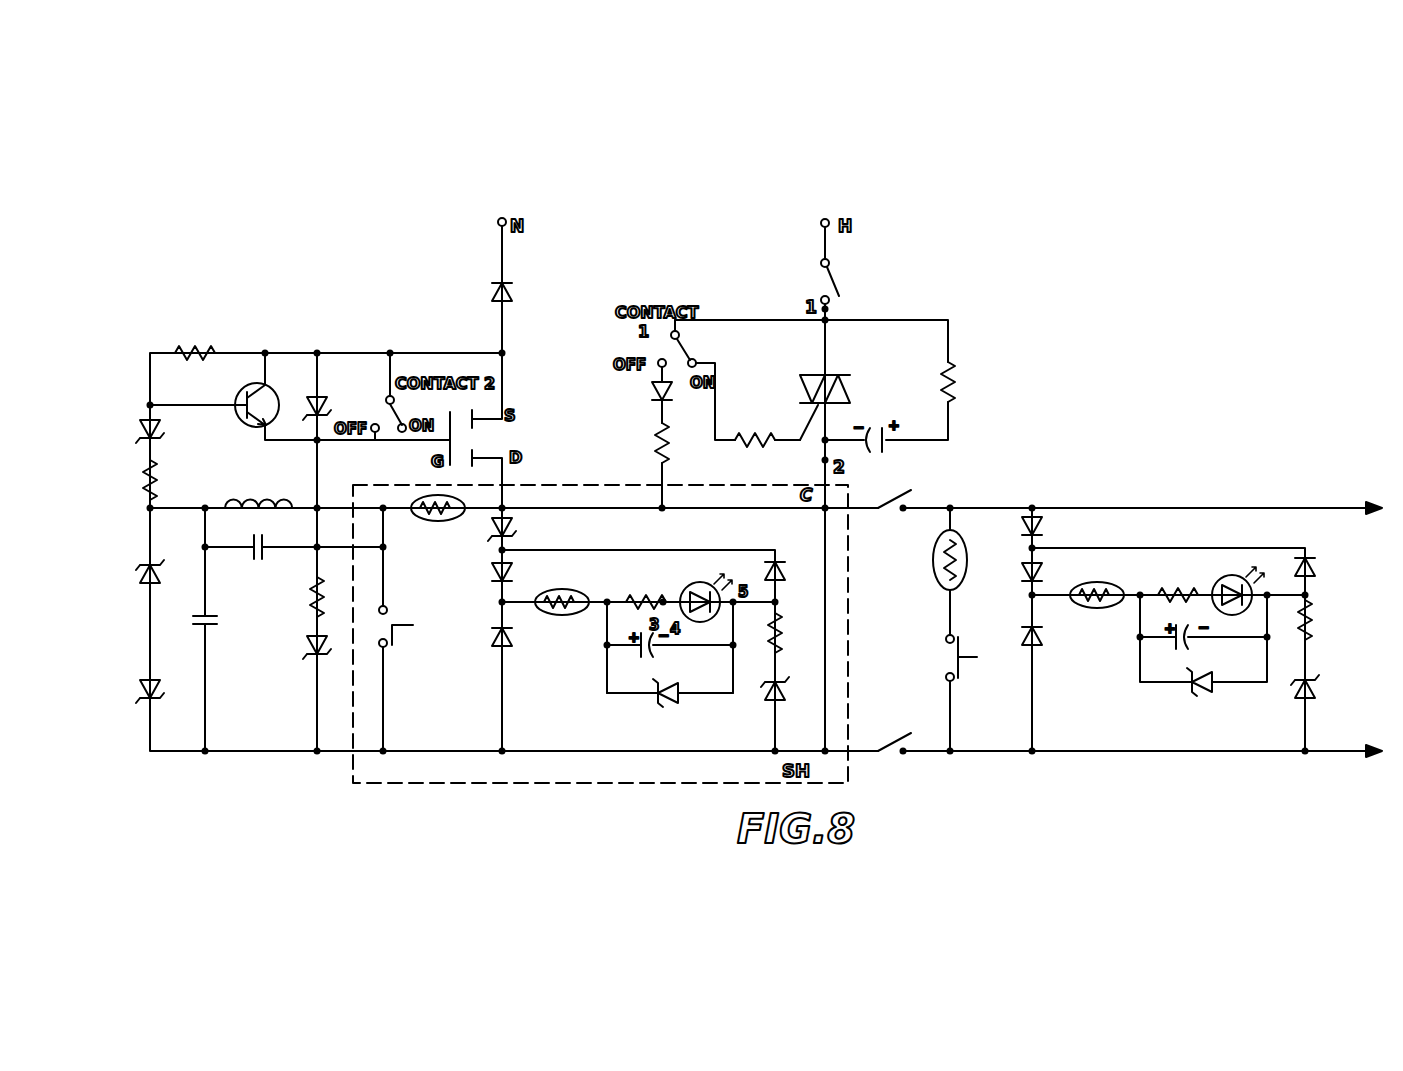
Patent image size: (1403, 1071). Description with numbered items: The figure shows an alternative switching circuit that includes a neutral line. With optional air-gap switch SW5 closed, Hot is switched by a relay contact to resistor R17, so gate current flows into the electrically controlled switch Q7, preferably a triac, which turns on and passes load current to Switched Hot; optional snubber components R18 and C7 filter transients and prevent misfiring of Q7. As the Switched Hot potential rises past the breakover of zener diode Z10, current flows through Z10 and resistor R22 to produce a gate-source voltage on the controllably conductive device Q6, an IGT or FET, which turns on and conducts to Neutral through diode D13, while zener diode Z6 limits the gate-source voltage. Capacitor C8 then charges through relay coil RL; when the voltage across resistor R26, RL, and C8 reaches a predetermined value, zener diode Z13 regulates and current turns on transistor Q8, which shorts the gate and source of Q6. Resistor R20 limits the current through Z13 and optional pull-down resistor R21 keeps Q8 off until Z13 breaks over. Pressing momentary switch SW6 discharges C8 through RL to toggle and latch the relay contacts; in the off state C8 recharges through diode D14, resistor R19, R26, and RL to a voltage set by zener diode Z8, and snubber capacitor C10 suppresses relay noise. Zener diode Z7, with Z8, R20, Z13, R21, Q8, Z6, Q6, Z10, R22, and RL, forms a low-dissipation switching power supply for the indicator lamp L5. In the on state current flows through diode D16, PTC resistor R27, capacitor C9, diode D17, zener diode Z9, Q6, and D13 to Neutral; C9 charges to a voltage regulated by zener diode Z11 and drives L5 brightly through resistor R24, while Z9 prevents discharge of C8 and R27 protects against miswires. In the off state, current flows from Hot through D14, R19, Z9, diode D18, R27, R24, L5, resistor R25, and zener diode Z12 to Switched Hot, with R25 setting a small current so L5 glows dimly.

The pull-down resistor R21 is at (197, 342).
The zener diode Z13 is at (166, 431).
The transistor Q8 is at (233, 399).
The resistor R20 is at (171, 480).
The relay coil RL is at (260, 494).
The zener diode Z6 is at (324, 398).
The controllably conductive device Q6 is at (497, 429).
The diode D13 is at (522, 293).
The resistor R26 is at (438, 520).
The zener diode Z9 is at (515, 529).
The diode D18 is at (482, 574).
The PTC resistor R27 is at (562, 590).
The momentary switch SW6 is at (410, 629).
The diode D16 is at (518, 649).
The snubber capacitor C10 is at (296, 560).
The capacitor C8 is at (217, 631).
The resistor R22 is at (295, 597).
The zener diode Z10 is at (297, 647).
The zener diode Z8 is at (136, 573).
The zener diode Z7 is at (135, 691).
The diode D14 is at (639, 395).
The resistor R19 is at (639, 443).
The resistor R17 is at (756, 452).
The air-gap switch SW5 is at (852, 261).
The electrically controlled switch Q7 is at (835, 407).
The snubber resistor R18 is at (970, 382).
The snubber capacitor C7 is at (855, 452).
The diode D17 is at (793, 558).
The indicator lamp L5 is at (706, 592).
The resistor R24 is at (642, 591).
The capacitor C9 is at (670, 654).
The zener diode Z11 is at (670, 706).
The resistor R25 is at (793, 627).
The zener diode Z12 is at (763, 701).